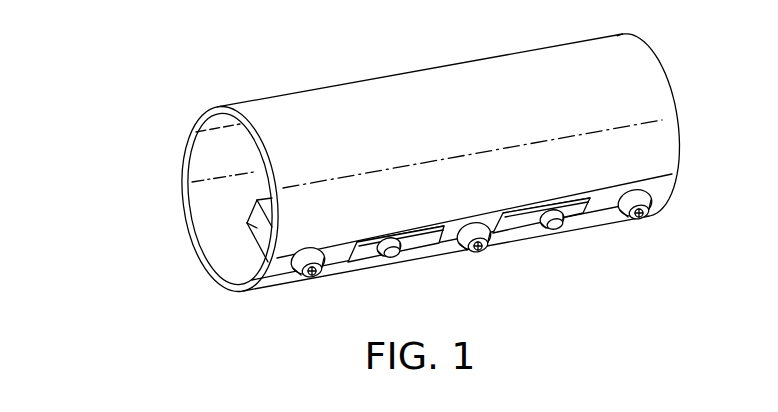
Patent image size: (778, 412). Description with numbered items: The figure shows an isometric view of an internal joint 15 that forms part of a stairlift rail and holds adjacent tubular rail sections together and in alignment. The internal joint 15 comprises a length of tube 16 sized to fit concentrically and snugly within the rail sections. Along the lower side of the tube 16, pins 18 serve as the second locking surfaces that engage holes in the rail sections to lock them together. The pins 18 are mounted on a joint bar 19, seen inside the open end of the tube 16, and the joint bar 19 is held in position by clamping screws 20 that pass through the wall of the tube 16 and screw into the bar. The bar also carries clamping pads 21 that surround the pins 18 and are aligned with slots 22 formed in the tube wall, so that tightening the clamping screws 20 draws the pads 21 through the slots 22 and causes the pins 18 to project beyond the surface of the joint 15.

The internal joint 15 is at (148, 242).
The tube 16 is at (438, 82).
The pins 18 is at (389, 256).
The joint bar 19 is at (247, 224).
The clamping screws 20 is at (312, 278).
The clamping pads 21 is at (418, 248).
The slots 22 is at (425, 225).